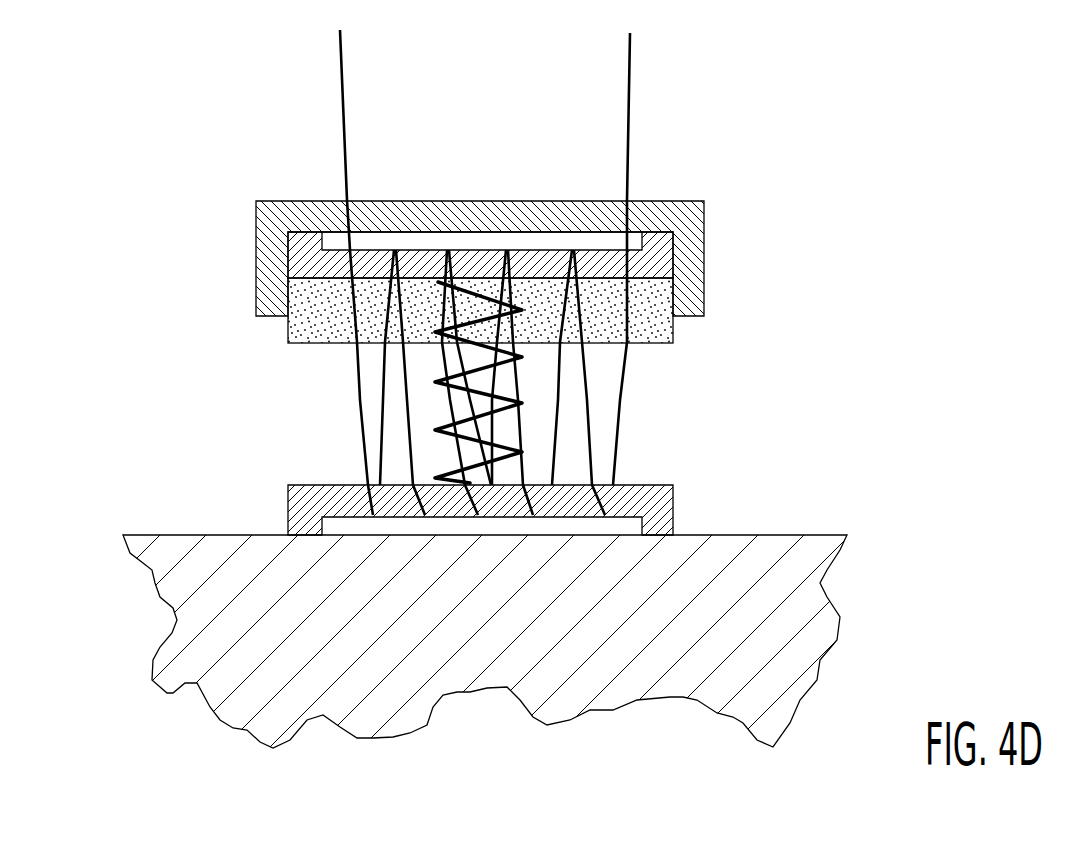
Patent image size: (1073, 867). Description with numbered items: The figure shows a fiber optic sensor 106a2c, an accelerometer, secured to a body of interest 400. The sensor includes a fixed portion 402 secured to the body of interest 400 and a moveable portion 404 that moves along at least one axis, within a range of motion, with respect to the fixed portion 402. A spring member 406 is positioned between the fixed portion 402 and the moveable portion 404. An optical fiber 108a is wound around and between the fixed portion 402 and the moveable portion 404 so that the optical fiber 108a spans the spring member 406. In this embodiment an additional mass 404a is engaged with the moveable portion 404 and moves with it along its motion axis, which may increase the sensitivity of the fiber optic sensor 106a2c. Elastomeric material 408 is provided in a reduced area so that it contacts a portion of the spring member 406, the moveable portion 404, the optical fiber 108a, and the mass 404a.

The body of interest 400 is at (265, 665).
The fixed portion 402 is at (657, 512).
The moveable portion 404 is at (657, 240).
The mass 404a is at (692, 260).
The spring member 406 is at (452, 396).
The elastomeric material 408 is at (286, 330).
The optical fiber 108a is at (340, 68).
The fiber optic sensor 106a2c is at (822, 145).